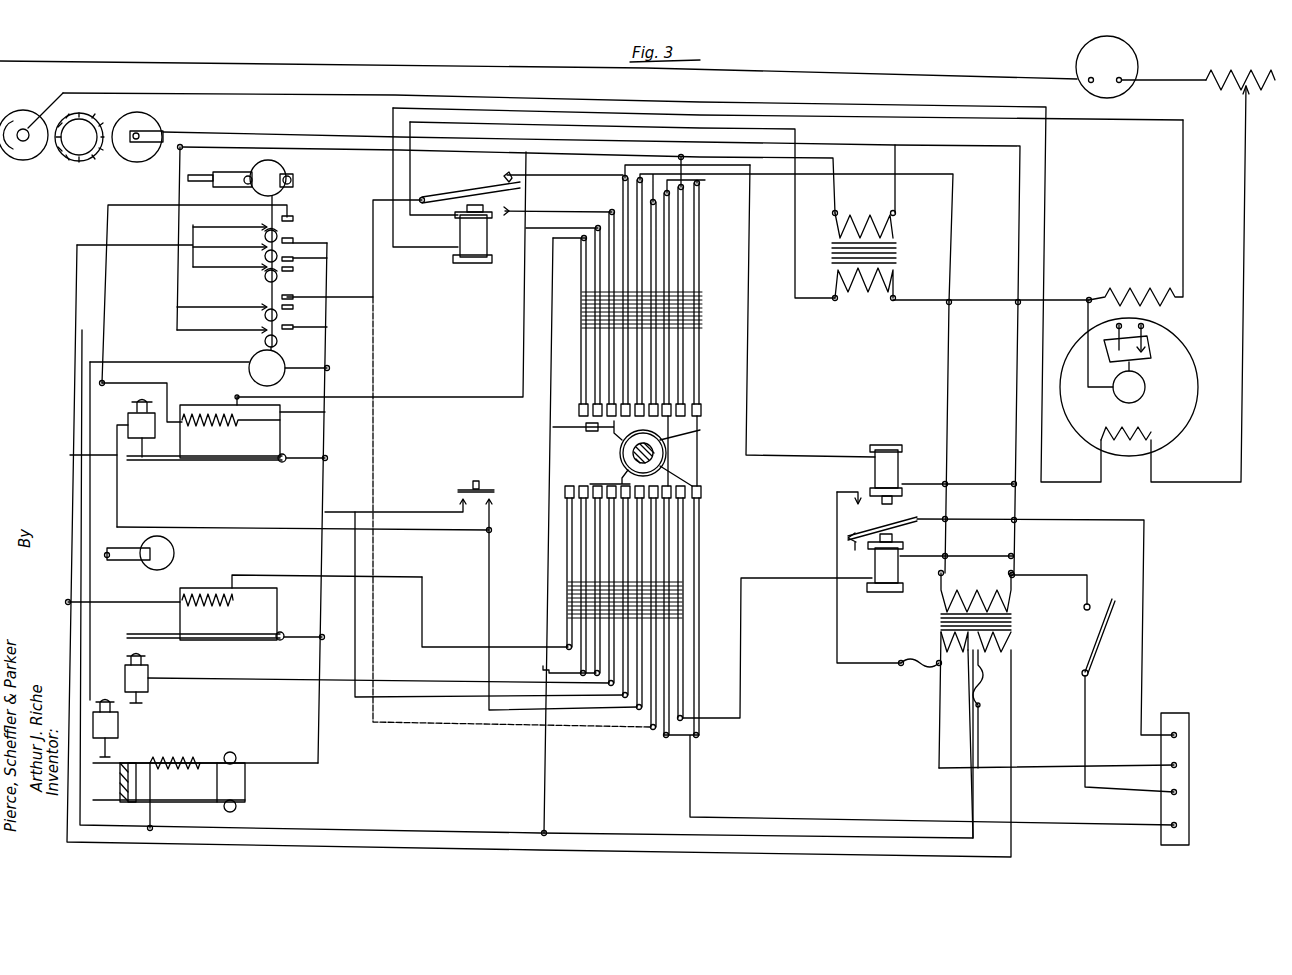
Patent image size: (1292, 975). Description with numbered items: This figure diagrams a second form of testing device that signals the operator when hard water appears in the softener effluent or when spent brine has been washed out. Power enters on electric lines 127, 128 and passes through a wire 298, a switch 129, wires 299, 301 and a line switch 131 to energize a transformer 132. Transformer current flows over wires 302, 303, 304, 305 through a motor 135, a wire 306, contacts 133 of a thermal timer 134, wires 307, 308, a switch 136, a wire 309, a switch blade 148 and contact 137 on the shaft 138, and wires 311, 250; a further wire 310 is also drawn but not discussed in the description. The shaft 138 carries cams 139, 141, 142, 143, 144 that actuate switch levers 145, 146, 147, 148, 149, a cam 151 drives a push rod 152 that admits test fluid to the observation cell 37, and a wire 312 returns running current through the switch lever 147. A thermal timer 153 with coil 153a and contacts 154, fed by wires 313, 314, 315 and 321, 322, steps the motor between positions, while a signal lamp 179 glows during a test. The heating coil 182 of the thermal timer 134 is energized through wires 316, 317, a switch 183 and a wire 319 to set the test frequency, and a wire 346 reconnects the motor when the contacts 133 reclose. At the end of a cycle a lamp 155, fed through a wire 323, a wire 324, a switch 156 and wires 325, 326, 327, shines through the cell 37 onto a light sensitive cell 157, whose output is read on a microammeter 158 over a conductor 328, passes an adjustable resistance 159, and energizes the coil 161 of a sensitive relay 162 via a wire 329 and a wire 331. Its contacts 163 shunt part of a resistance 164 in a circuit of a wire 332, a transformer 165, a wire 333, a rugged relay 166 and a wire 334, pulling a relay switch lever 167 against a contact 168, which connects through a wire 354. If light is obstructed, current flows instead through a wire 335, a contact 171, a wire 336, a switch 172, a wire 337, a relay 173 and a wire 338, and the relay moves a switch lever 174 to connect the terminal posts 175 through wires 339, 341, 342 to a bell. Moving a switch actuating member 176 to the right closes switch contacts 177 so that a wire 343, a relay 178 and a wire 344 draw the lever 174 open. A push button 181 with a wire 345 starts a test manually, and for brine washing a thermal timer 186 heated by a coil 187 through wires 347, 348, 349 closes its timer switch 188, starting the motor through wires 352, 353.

The observation cell 37 is at (76, 162).
The electric line 127 is at (1116, 828).
The electric line 128 is at (1112, 790).
The switch 129 is at (666, 406).
The line switch 131 is at (1113, 602).
The transformer 132 is at (1012, 614).
The contacts 133 is at (142, 462).
The thermal timer 134 is at (230, 427).
The motor 135 is at (248, 374).
The switch 136 is at (618, 480).
The contact 137 is at (296, 236).
The shaft 138 is at (247, 352).
The cam 139 is at (278, 343).
The cam 141 is at (277, 313).
The cam 142 is at (283, 283).
The cam 143 is at (296, 257).
The cam 144 is at (294, 221).
The switch lever 145 is at (252, 337).
The switch lever 146 is at (235, 313).
The switch lever 147 is at (230, 276).
The switch lever 148 is at (230, 253).
The switch lever 149 is at (230, 233).
The cam 151 is at (275, 170).
The push rod 152 is at (203, 173).
The thermal timer 153 is at (245, 788).
The coil 153a is at (176, 762).
The contacts 154 is at (112, 758).
The lamp 155 is at (160, 123).
The switch 156 is at (672, 492).
The light sensitive cell 157 is at (16, 112).
The microammeter 158 is at (1136, 66).
The adjustable resistance 159 is at (1246, 66).
The coil 161 is at (1147, 432).
The sensitive relay 162 is at (1175, 365).
The contacts 163 is at (1150, 340).
The resistance 164 is at (1128, 292).
The transformer 165 is at (880, 250).
The rugged relay 166 is at (476, 250).
The relay switch lever 167 is at (447, 196).
The contact 168 is at (510, 204).
The contact 171 is at (505, 180).
The switch 172 is at (648, 402).
The relay 173 is at (893, 468).
The switch lever 174 is at (895, 522).
The terminal posts 175 is at (1180, 765).
The switch actuating member 176 is at (666, 440).
The switch contacts 177 is at (684, 498).
The relay 178 is at (900, 580).
The signal lamp 179 is at (175, 545).
The push button 181 is at (455, 486).
The heating coil 182 is at (198, 428).
The switch 183 is at (553, 418).
The thermal timer 186 is at (274, 607).
The coil 187 is at (204, 594).
The timer switch 188 is at (122, 652).
The wire 250 is at (1013, 852).
The wire 298 is at (700, 559).
The wire 299 is at (952, 258).
The wire 301 is at (1038, 584).
The wire 302 is at (613, 832).
The wire 303 is at (377, 828).
The wire 304 is at (66, 652).
The wire 305 is at (80, 433).
The wire 306 is at (302, 411).
The wire 307 is at (270, 526).
The wire 308 is at (487, 577).
The wire 309 is at (355, 620).
The lead 310 is at (440, 392).
The wire 311 is at (72, 323).
The wire 312 is at (326, 313).
The wire 313 is at (318, 714).
The wire 314 is at (322, 555).
The wire 315 is at (324, 479).
The wire 316 is at (106, 219).
The wire 317 is at (136, 382).
The wire 319 is at (547, 582).
The wire 321 is at (68, 459).
The wire 322 is at (93, 574).
The wire 323 is at (176, 190).
The wire 324 is at (375, 427).
The wire 325 is at (1018, 506).
The wire 326 is at (1015, 372).
The wire 327 is at (314, 130).
The conductor 328 is at (357, 64).
The wire 329 is at (1243, 262).
The wire 331 is at (1046, 196).
The wire 332 is at (974, 300).
The wire 333 is at (795, 245).
The wire 334 is at (1183, 217).
The wire 335 is at (375, 284).
The wire 336 is at (538, 176).
The wire 337 is at (747, 305).
The wire 338 is at (970, 483).
The wire 339 is at (1142, 656).
The wire 341 is at (834, 534).
The wire 342 is at (1033, 763).
The wire 343 is at (742, 681).
The wire 344 is at (957, 545).
The wire 345 is at (406, 510).
The wire 346 is at (298, 456).
The wire 347 is at (120, 602).
The wire 348 is at (423, 626).
The wire 349 is at (540, 667).
The wire 352 is at (408, 682).
The wire 353 is at (298, 636).
The wire 354 is at (603, 212).